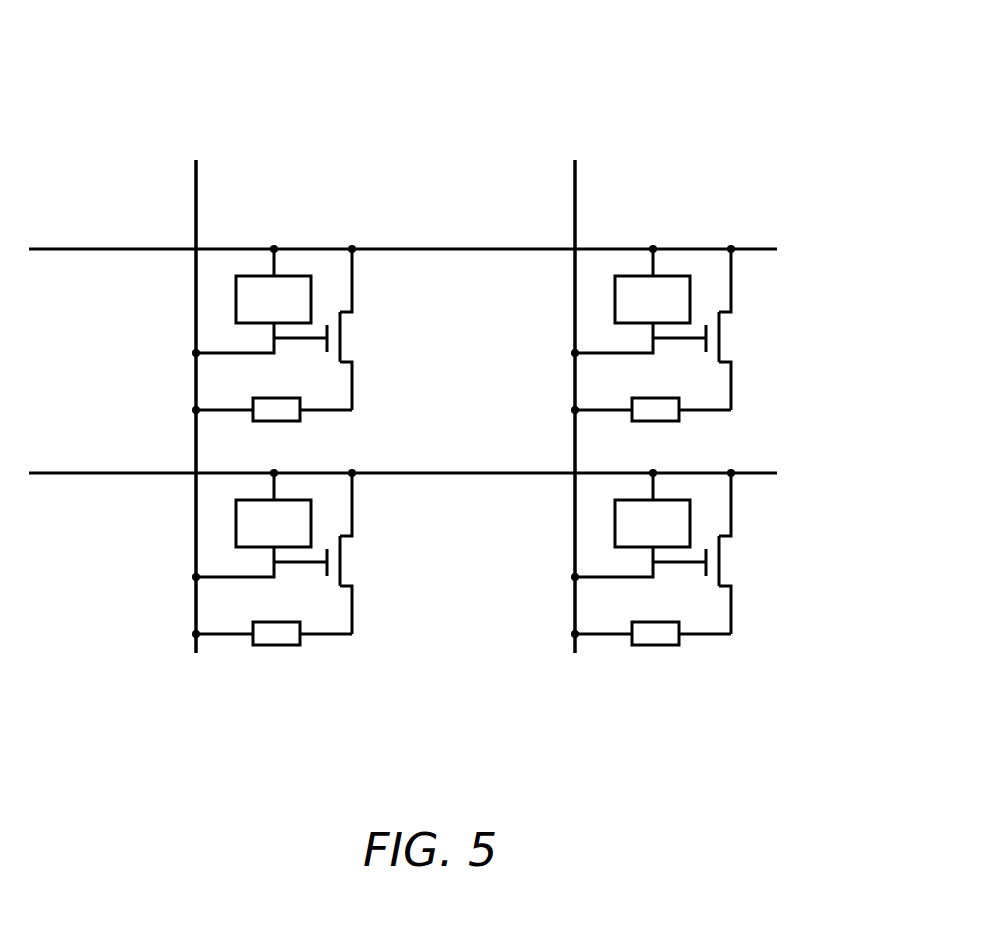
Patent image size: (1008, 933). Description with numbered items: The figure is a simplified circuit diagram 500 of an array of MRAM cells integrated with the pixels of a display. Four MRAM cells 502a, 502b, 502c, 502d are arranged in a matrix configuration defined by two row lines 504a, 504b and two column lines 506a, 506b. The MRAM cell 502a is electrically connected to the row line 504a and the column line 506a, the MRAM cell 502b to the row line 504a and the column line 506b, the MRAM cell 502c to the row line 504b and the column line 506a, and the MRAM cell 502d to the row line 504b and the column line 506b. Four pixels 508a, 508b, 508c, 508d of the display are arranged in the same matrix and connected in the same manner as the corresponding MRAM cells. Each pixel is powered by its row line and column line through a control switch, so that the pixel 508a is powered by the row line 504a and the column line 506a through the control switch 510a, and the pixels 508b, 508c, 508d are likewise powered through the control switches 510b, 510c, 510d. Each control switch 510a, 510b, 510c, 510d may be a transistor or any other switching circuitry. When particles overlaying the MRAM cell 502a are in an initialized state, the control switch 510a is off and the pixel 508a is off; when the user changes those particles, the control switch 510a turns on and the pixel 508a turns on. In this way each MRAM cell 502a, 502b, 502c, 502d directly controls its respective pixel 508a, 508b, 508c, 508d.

The circuit diagram 500 is at (158, 122).
The MRAM cell 502a is at (251, 301).
The MRAM cell 502b is at (630, 301).
The MRAM cell 502c is at (251, 525).
The MRAM cell 502d is at (630, 525).
The row line 504a is at (79, 248).
The row line 504b is at (79, 472).
The column line 506a is at (196, 192).
The column line 506b is at (575, 192).
The pixel 508a is at (300, 419).
The pixel 508b is at (679, 419).
The pixel 508c is at (300, 643).
The pixel 508d is at (679, 643).
The control switch 510a is at (341, 338).
The control switch 510b is at (720, 338).
The control switch 510c is at (341, 562).
The control switch 510d is at (720, 562).